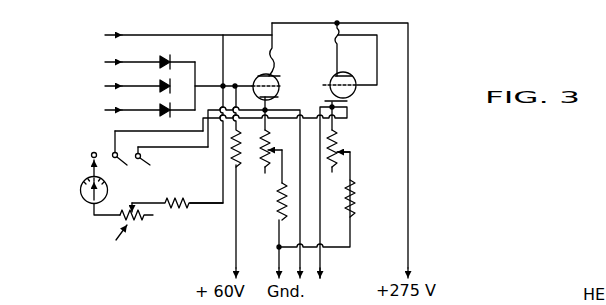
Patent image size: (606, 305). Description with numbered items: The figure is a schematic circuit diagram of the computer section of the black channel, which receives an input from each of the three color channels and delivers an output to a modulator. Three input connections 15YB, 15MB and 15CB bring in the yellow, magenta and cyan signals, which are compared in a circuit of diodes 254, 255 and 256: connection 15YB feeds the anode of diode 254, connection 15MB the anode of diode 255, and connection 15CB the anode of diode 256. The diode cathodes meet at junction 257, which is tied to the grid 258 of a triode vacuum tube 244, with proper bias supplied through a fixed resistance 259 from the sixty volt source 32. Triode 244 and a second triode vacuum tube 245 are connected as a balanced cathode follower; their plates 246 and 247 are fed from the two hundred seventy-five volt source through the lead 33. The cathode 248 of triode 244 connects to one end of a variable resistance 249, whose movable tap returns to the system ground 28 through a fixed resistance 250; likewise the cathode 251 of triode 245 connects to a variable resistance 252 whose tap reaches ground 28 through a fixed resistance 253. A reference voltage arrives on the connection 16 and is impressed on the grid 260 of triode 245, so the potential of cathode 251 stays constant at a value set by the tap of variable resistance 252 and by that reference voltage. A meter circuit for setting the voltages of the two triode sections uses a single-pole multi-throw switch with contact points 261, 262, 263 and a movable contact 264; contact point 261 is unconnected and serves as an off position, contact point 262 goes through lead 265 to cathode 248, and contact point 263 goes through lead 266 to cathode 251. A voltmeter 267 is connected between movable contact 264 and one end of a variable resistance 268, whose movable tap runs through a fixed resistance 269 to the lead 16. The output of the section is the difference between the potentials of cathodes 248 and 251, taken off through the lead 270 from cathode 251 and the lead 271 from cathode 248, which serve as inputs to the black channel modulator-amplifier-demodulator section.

The connection 16 is at (105, 33).
The connection 15YB is at (105, 62).
The connection 15MB is at (105, 86).
The connection 15CB is at (105, 110).
The diode 254 is at (163, 58).
The diode 255 is at (163, 84).
The diode 256 is at (163, 108).
The junction 257 is at (208, 88).
The triode vacuum tube 244 is at (272, 58).
The grid 258 is at (264, 82).
The plate 246 is at (285, 78).
The triode vacuum tube 245 is at (347, 76).
The plate 247 is at (339, 75).
The cathode 248 is at (323, 85).
The cathode 251 is at (347, 101).
The grid 260 is at (356, 77).
The variable resistance 252 is at (340, 148).
The fixed resistance 253 is at (351, 194).
The lead 265 is at (115, 131).
The lead 266 is at (174, 131).
The contact point 262 is at (128, 157).
The contact point 263 is at (141, 156).
The contact point 261 is at (91, 154).
The movable contact 264 is at (90, 168).
The voltmeter 267 is at (80, 198).
The variable resistance 268 is at (129, 230).
The fixed resistance 269 is at (175, 196).
The fixed resistance 259 is at (232, 158).
The variable resistance 249 is at (255, 166).
The fixed resistance 250 is at (263, 203).
The +60 volt source 32 is at (234, 249).
The lead 271 is at (276, 247).
The system ground 28 is at (276, 262).
The lead 270 is at (321, 262).
The lead 33 is at (411, 256).